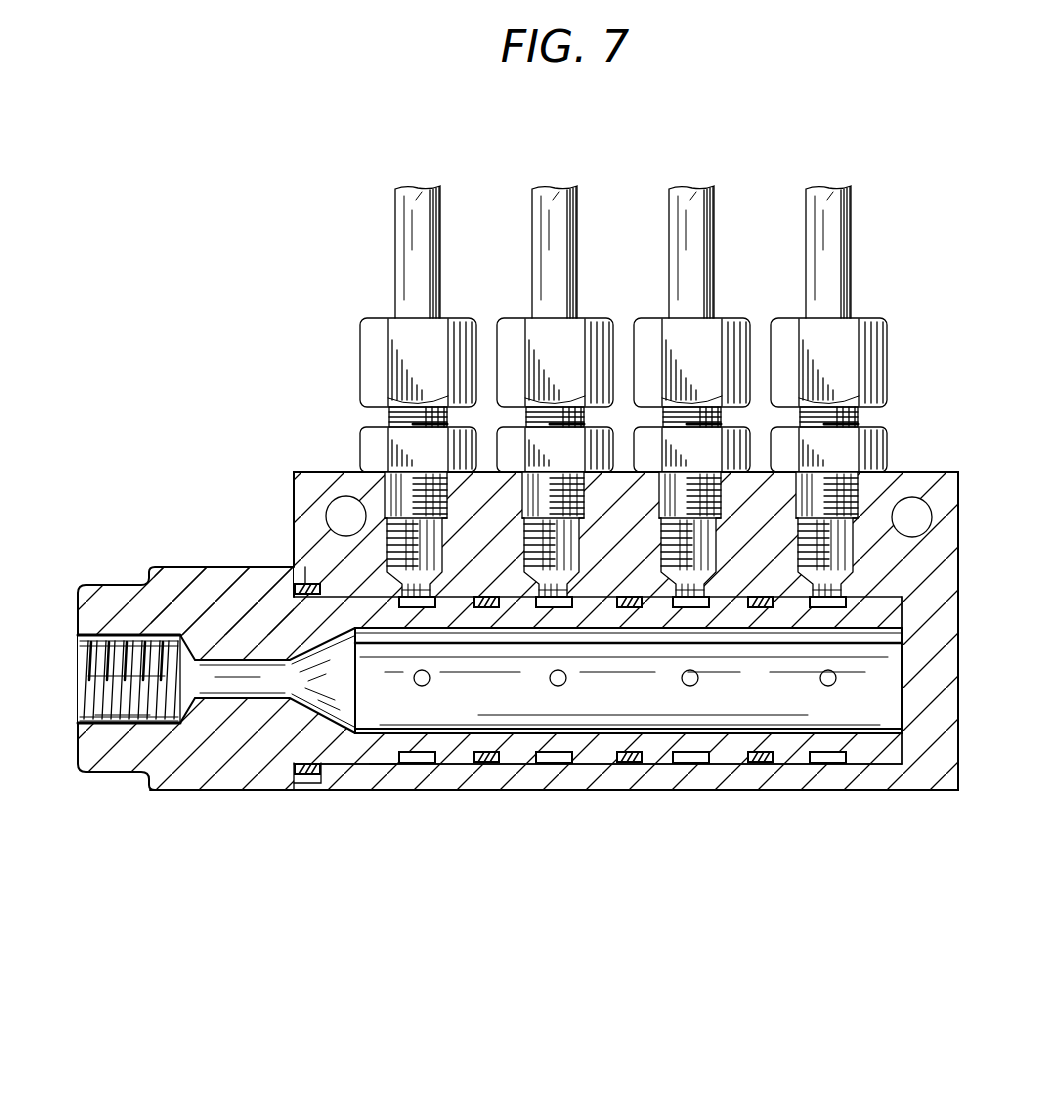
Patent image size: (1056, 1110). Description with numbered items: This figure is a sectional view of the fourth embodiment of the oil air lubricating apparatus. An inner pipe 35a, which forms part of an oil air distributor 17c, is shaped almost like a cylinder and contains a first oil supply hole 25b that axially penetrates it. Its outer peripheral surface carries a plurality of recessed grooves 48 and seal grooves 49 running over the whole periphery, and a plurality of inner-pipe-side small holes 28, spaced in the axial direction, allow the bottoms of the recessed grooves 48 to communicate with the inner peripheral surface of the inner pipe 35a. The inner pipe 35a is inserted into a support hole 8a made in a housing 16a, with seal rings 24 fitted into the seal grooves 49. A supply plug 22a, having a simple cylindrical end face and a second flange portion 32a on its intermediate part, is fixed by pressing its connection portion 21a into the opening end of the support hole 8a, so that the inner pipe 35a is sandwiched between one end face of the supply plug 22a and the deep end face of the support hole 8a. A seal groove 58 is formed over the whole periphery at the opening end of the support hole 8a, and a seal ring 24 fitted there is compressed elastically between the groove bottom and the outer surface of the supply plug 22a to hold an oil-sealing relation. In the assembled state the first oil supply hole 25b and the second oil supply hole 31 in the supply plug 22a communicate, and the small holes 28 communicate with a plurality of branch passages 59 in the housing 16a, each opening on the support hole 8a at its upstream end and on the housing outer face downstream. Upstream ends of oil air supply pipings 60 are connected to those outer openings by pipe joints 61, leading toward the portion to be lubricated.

The oil air supply piping 60 is at (426, 205).
The pipe joint 61 is at (383, 477).
The branch passage 59 is at (425, 507).
The seal groove 58 is at (300, 580).
The housing 16a is at (896, 487).
The supply plug 22a is at (196, 582).
The second flange portion 32a is at (232, 580).
The oil air distributor 17c is at (918, 585).
The inner-pipe-side small hole 28 is at (837, 678).
The second oil supply hole 31 is at (105, 708).
The seal ring 24 is at (312, 780).
The connection portion 21a is at (348, 767).
The support hole 8a is at (383, 756).
The recessed groove 48 is at (426, 766).
The seal groove 49 is at (488, 766).
The inner pipe 35a is at (881, 750).
The first oil supply hole 25b is at (897, 720).